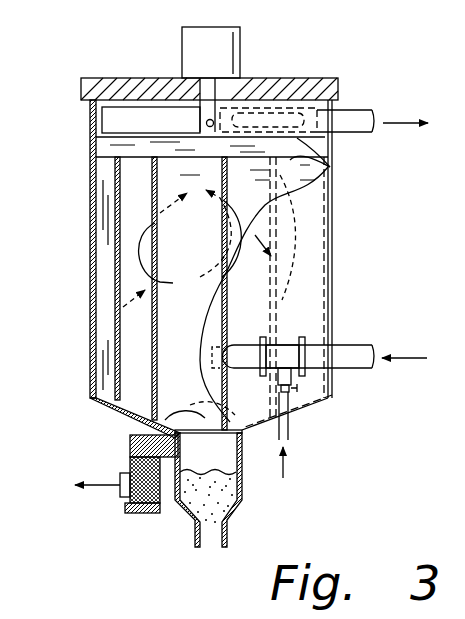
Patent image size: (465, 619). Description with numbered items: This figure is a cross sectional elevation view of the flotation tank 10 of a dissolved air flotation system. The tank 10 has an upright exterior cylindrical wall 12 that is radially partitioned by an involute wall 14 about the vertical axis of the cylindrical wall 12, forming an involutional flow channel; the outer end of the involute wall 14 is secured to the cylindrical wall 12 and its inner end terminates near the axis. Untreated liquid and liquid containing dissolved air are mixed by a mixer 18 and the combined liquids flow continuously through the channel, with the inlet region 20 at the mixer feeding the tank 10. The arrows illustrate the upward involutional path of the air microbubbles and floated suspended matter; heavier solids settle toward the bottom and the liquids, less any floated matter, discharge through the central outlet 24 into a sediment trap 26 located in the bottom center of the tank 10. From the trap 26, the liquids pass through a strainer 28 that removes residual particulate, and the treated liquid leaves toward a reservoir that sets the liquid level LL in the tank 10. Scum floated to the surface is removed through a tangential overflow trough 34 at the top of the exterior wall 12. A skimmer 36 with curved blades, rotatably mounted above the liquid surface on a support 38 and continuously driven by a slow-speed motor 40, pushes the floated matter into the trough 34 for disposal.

The flotation tank 10 is at (90, 182).
The exterior cylindrical wall 12 is at (90, 257).
The involute wall 14 is at (135, 367).
The mixer 18 is at (302, 368).
The nozzle 20 is at (222, 347).
The outlet 24 is at (165, 420).
The sediment trap 26 is at (242, 490).
The strainer 28 is at (130, 463).
The tangential overflow trough 34 is at (345, 118).
The skimmer 36 is at (123, 112).
The support 38 is at (160, 82).
The slow-speed motor 40 is at (223, 65).
The liquid level LL is at (328, 167).